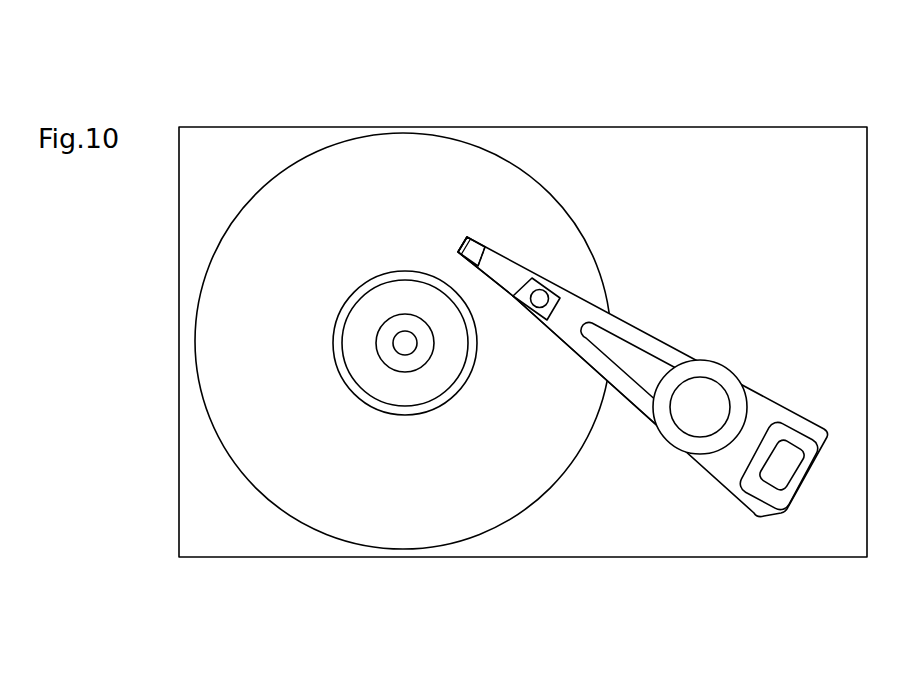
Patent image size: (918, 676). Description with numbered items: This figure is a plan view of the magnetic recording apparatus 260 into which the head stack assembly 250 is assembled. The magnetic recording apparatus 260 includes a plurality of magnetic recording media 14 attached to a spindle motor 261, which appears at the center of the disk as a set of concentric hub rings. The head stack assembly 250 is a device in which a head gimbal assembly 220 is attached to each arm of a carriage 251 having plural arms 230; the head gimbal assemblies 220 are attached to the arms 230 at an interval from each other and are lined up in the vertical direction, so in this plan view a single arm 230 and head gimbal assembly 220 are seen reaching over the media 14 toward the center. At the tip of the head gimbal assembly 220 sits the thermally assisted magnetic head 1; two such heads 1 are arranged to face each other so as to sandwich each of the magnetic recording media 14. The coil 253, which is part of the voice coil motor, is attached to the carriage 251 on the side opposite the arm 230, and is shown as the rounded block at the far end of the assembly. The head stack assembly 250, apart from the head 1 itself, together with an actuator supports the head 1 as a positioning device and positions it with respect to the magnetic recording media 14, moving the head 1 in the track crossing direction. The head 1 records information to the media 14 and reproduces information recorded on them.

The thermally assisted magnetic head 1 is at (482, 240).
The magnetic recording media 14 is at (328, 535).
The head gimbal assembly 220 is at (510, 297).
The arm 230 is at (633, 404).
The head stack assembly 250 is at (706, 480).
The carriage 251 is at (708, 361).
The coil 253 is at (808, 484).
The magnetic recording apparatus 260 is at (566, 96).
The spindle motor 261 is at (405, 355).